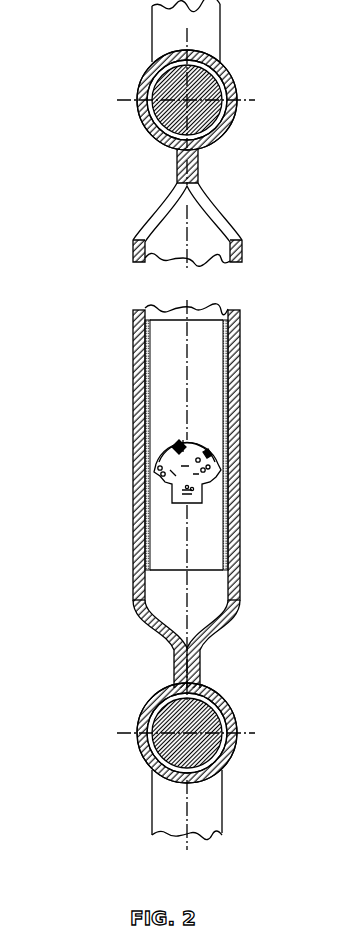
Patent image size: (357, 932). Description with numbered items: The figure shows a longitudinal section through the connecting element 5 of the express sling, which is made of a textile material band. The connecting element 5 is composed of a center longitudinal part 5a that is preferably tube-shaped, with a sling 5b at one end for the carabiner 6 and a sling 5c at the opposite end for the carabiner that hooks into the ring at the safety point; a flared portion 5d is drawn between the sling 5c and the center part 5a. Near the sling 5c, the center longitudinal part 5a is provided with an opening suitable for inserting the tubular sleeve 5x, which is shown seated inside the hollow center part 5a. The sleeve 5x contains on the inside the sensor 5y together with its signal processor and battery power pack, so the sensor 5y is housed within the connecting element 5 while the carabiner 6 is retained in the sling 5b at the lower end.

The connecting element 5 is at (80, 408).
The center longitudinal part 5a is at (135, 522).
The sling 5b is at (137, 721).
The sling 5c is at (137, 108).
The flared connecting portion 5d is at (165, 208).
The tubular sleeve 5x is at (215, 541).
The sensor 5y is at (200, 493).
The carabiner 6 is at (160, 813).